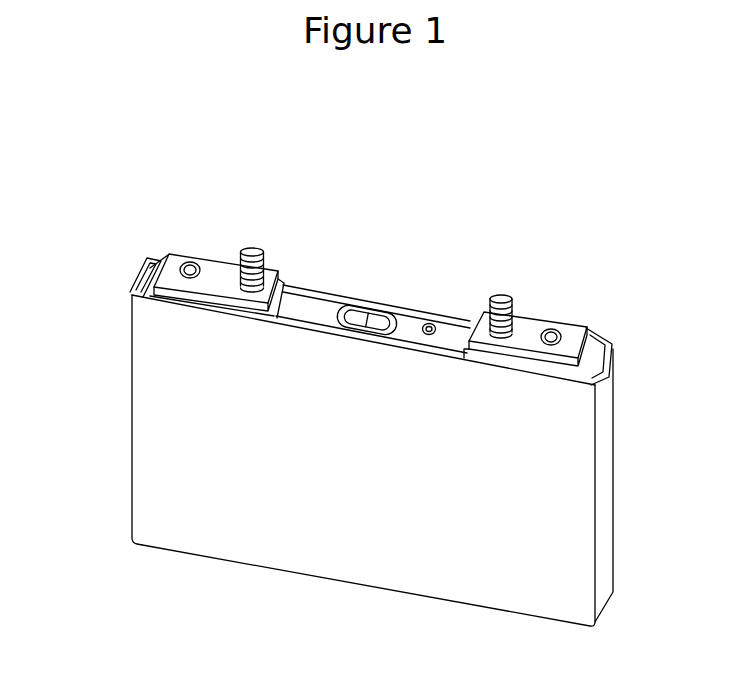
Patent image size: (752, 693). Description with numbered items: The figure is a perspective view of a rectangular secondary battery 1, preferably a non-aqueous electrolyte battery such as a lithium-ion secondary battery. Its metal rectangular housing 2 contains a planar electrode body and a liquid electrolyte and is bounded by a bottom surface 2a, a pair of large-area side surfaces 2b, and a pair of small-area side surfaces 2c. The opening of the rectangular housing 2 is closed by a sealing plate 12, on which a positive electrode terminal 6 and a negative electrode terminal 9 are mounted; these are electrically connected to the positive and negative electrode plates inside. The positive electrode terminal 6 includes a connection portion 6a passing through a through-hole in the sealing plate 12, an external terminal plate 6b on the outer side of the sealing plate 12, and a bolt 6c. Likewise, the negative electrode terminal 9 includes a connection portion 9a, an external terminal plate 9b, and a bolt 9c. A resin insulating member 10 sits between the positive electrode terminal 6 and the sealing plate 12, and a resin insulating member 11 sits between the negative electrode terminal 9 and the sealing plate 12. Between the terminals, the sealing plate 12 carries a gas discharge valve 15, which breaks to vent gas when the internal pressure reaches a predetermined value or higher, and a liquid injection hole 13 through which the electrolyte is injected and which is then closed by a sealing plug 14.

The rectangular secondary battery 1 is at (387, 127).
The rectangular housing 2 is at (358, 473).
The bottom surface 2a is at (377, 588).
The large-area side surface 2b is at (473, 558).
The small-area side surface 2c is at (132, 430).
The positive electrode terminal 6 is at (546, 290).
The connection portion 6a is at (553, 329).
The external terminal plate 6b is at (526, 327).
The bolt 6c is at (501, 290).
The negative electrode terminal 9 is at (226, 242).
The connection portion 9a is at (190, 262).
The external terminal plate 9b is at (215, 280).
The bolt 9c is at (265, 251).
The insulating member 10 is at (600, 333).
The insulating member 11 is at (150, 262).
The sealing plate 12 is at (309, 303).
The liquid injection hole 13 is at (428, 325).
The sealing plug 14 is at (436, 328).
The gas discharge valve 15 is at (378, 320).